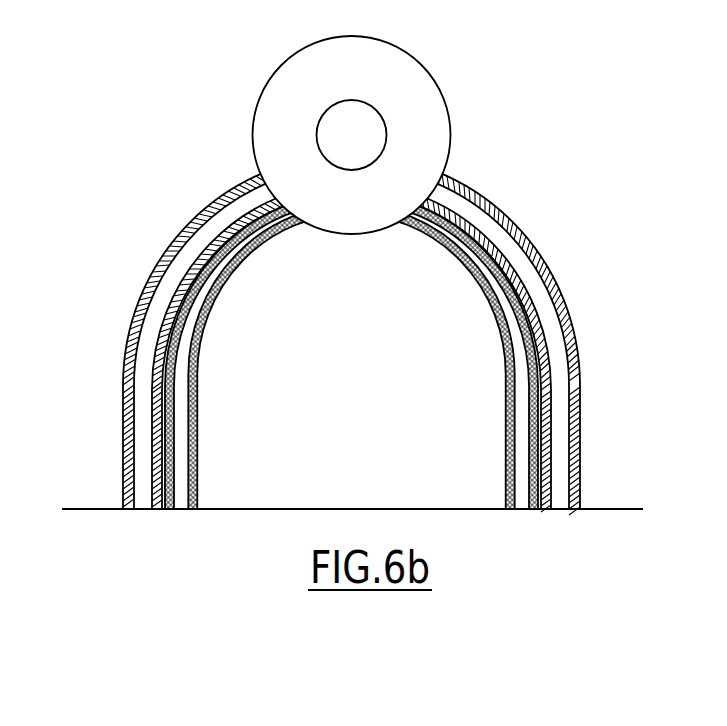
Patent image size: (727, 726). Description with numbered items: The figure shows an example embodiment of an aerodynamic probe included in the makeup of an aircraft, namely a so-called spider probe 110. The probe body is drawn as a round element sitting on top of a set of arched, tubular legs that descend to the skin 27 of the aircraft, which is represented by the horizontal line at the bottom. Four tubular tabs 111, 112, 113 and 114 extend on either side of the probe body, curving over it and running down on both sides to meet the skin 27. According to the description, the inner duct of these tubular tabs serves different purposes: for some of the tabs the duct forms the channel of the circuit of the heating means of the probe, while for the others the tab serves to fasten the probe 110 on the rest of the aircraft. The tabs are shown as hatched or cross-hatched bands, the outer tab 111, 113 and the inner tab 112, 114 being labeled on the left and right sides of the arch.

The skin 27 is at (608, 508).
The spider probe 110 is at (470, 104).
The tubular tab 111 is at (573, 322).
The tubular tab 112 is at (501, 350).
The tubular tab 113 is at (162, 251).
The tubular tab 114 is at (199, 368).